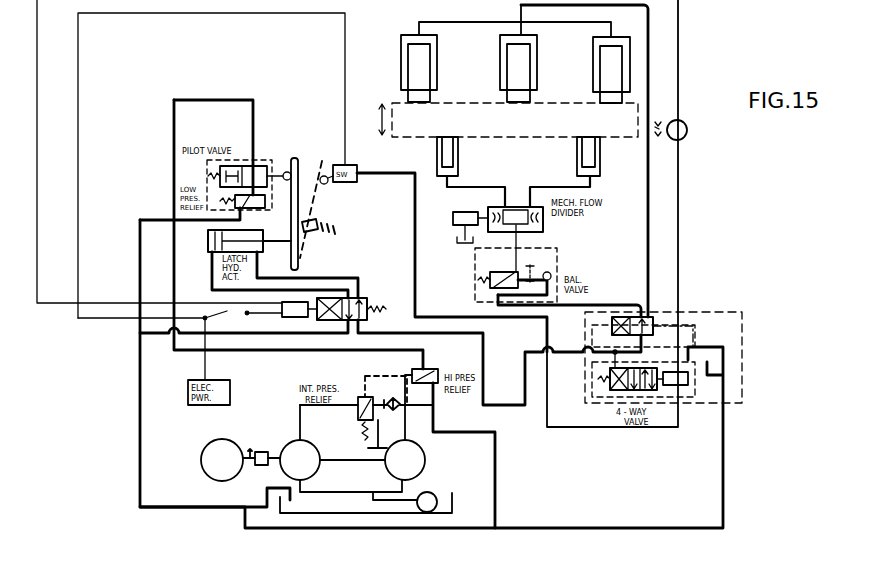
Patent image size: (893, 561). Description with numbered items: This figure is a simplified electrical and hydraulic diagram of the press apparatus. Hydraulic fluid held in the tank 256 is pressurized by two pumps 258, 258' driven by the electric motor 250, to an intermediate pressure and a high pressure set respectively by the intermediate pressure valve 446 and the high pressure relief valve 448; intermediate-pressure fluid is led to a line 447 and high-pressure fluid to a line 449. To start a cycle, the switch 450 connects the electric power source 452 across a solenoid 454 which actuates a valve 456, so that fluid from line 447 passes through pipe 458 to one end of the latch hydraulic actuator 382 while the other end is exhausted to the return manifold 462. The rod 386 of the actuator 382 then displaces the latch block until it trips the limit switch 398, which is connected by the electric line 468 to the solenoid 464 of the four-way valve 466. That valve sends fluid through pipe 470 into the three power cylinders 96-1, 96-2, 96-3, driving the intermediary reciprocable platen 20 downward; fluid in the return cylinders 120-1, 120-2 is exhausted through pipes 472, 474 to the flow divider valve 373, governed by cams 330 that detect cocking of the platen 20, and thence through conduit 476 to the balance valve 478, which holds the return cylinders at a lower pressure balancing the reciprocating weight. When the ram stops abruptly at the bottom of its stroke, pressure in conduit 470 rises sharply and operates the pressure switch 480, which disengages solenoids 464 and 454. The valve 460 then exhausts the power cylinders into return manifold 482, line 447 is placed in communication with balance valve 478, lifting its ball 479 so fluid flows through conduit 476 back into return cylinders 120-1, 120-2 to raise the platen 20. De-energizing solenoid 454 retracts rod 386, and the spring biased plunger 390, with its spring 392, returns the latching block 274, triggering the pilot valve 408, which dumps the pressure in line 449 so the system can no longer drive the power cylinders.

The power cylinder 96-1 is at (455, 58).
The power cylinder 96-2 is at (537, 64).
The power cylinder 96-3 is at (630, 68).
The intermediary reciprocable platen 20 is at (398, 134).
The return cylinder 120-1 is at (458, 158).
The return cylinder 120-2 is at (606, 156).
The pipe 472 is at (483, 167).
The pipe 474 is at (572, 168).
The pressure switch 480 is at (687, 130).
The pipe 470 is at (648, 233).
The cams 330 is at (453, 212).
The flow divider valve 373 is at (492, 212).
The conduit 476 is at (520, 233).
The balance valve 478 is at (476, 268).
The ball 479 is at (551, 274).
The pilot valve 408 is at (267, 158).
The latching block 274 is at (300, 160).
The limit switch 398 is at (357, 182).
The spring biased plunger 390 is at (316, 222).
The detent spring 392 is at (336, 233).
The rod 386 is at (285, 239).
The latch hydraulic actuator 382 is at (210, 246).
The valve 460 is at (322, 278).
The pipe 458 is at (212, 290).
The valve 456 is at (370, 298).
The switch 450 is at (238, 318).
The return manifold 462 is at (140, 335).
The solenoid 454 is at (290, 350).
The line 449 is at (340, 350).
The high pressure relief valve 448 is at (430, 369).
The line 447 is at (470, 407).
The electric power source 452 is at (230, 392).
The intermediate pressure valve 446 is at (360, 420).
The motor 250 is at (201, 466).
The pump 258 is at (314, 464).
The pump 258' is at (431, 460).
The tank 256 is at (452, 502).
The four-way valve 466 is at (617, 390).
The solenoid 464 is at (688, 380).
The electric line 468 is at (578, 427).
The return manifold 482 is at (640, 528).